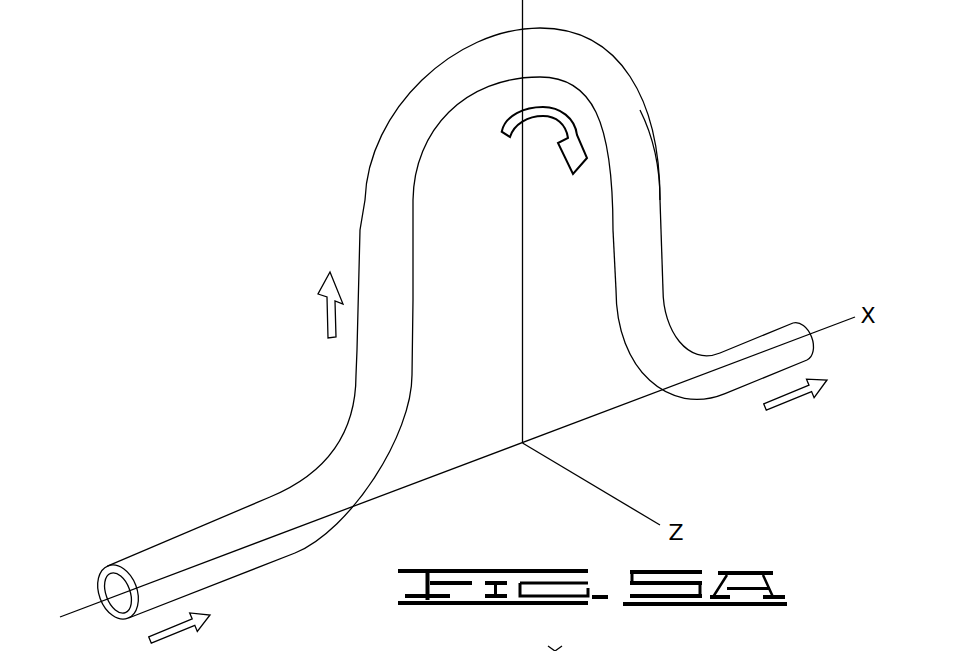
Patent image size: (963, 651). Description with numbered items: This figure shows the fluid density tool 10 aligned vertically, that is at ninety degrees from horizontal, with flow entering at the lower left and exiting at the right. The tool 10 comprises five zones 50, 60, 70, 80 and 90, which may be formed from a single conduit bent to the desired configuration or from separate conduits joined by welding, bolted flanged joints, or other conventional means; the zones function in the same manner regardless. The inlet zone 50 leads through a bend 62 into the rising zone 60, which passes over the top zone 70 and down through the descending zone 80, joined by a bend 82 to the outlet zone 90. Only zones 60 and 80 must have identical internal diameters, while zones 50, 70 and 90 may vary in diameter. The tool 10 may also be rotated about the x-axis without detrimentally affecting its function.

The fluid density tool 10 is at (303, 121).
The zone 50 is at (195, 560).
The zone 60 is at (390, 257).
The first bend 62 is at (327, 483).
The zone 70 is at (473, 72).
The zone 80 is at (642, 268).
The second bend 82 is at (630, 147).
The zone 90 is at (753, 353).